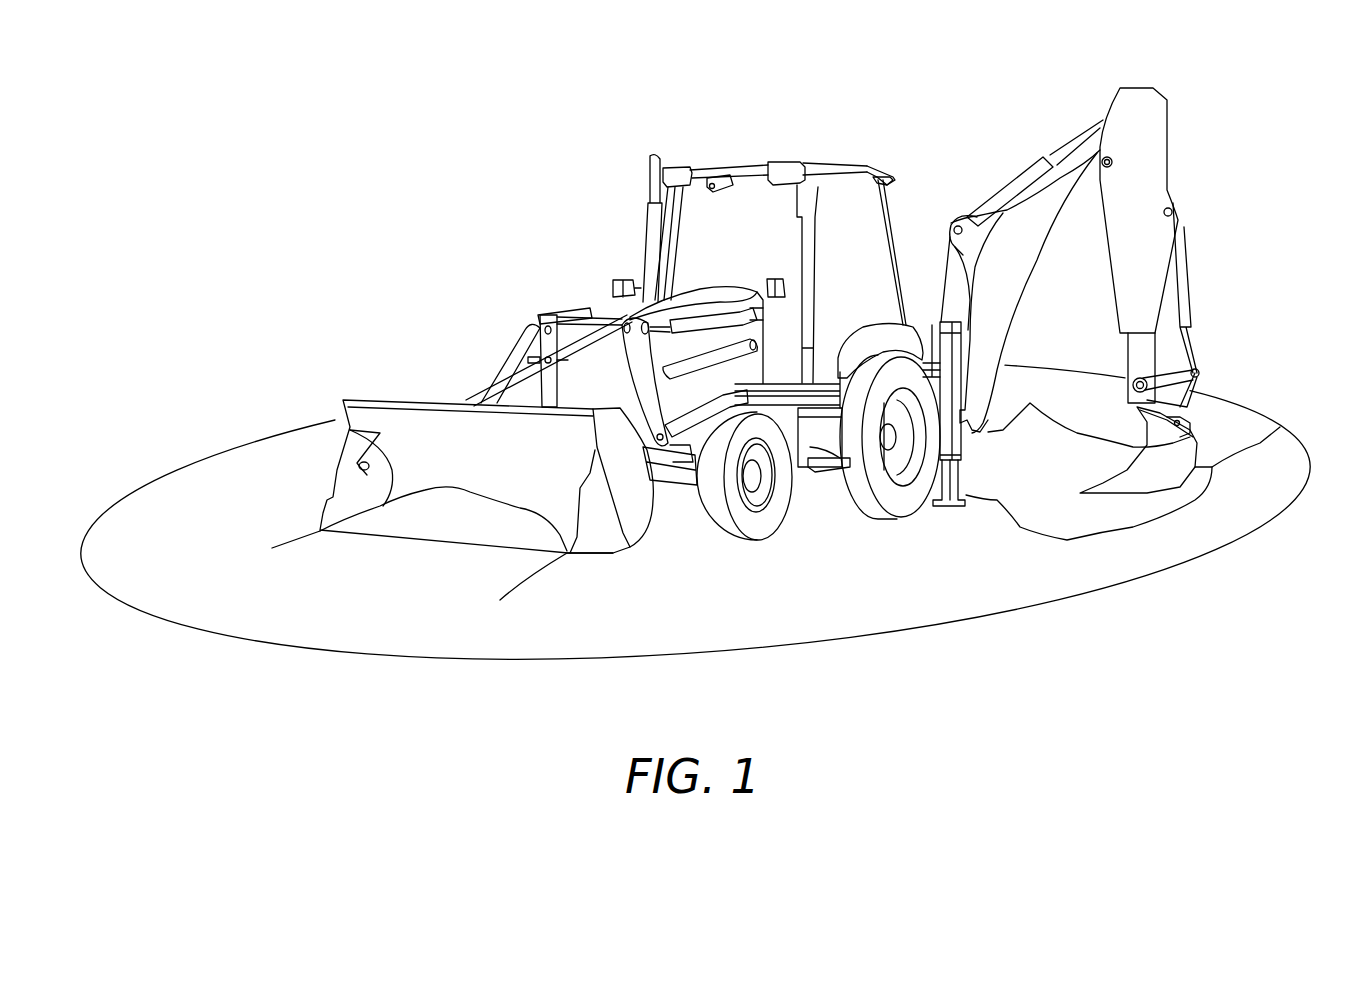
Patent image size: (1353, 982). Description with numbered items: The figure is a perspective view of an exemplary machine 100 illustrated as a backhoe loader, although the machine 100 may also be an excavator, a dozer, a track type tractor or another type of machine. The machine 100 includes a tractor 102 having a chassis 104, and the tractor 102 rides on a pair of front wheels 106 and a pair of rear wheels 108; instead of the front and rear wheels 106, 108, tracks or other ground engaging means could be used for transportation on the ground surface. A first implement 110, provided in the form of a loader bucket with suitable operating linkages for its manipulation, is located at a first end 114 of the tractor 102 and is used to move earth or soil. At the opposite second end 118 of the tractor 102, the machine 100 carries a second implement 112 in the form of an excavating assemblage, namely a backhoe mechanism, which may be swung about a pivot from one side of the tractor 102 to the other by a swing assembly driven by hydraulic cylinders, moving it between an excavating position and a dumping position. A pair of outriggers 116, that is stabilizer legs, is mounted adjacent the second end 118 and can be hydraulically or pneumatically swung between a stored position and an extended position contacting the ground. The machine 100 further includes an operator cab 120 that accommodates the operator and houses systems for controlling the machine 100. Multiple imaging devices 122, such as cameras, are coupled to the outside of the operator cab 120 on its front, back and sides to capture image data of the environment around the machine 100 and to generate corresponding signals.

The machine 100 is at (416, 216).
The tractor 102 is at (884, 565).
The chassis 104 is at (820, 470).
The front wheels 106 is at (732, 523).
The rear wheels 108 is at (897, 500).
The first implement 110 is at (365, 372).
The second implement 112 is at (1225, 356).
The first end 114 is at (362, 590).
The outriggers 116 is at (957, 478).
The second end 118 is at (1250, 424).
The operator cab 120 is at (750, 158).
The imaging devices 122 is at (717, 175).